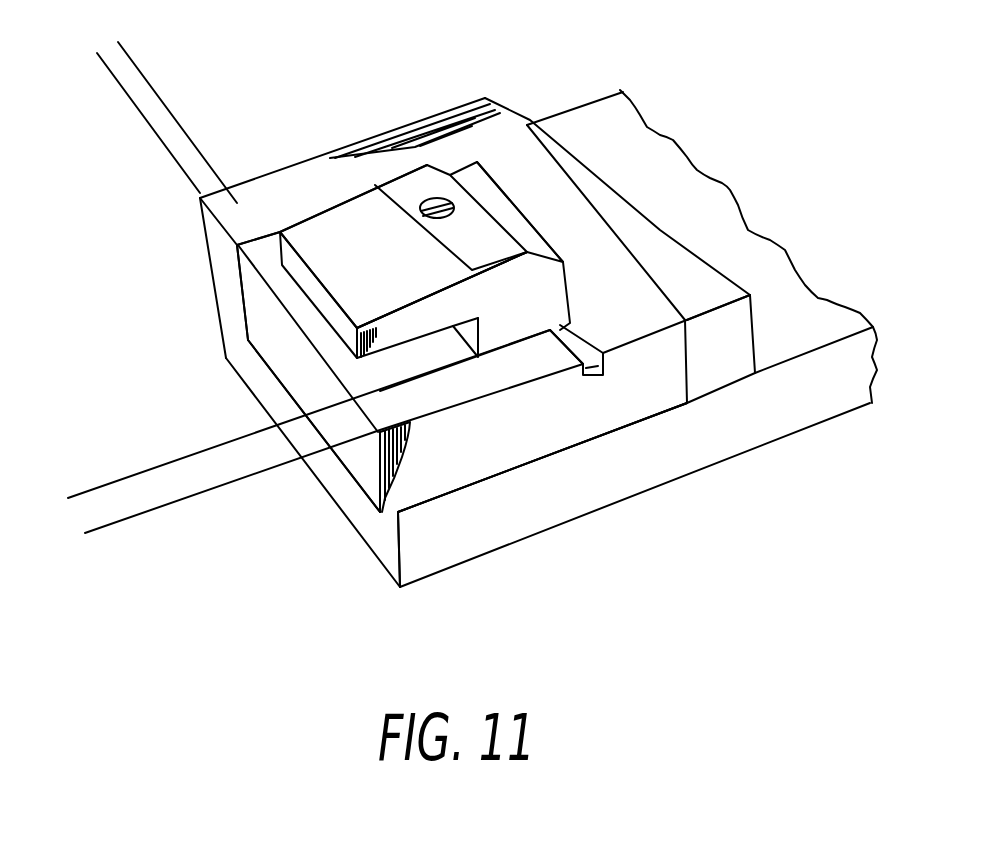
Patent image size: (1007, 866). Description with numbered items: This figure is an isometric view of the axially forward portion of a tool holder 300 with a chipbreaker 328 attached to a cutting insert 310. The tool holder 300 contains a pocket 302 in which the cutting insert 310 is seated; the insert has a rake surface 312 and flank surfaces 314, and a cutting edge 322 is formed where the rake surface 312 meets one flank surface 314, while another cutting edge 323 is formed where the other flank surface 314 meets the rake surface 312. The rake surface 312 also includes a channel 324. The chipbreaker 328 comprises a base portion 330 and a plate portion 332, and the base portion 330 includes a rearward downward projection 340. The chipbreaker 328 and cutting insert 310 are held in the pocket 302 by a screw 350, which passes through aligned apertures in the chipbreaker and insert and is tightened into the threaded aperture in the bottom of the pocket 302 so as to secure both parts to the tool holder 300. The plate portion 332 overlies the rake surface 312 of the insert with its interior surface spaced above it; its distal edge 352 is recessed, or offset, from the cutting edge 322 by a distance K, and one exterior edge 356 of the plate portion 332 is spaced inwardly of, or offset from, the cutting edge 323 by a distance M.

The tool holder 300 is at (618, 112).
The pocket 302 is at (598, 438).
The cutting insert 310 is at (253, 330).
The rake surface 312 is at (513, 203).
The flank surfaces 314 is at (363, 458).
The cutting edge 322 is at (263, 302).
The cutting edge 323 is at (377, 510).
The channel 324 is at (613, 380).
The chipbreaker 328 is at (348, 220).
The base portion 330 is at (533, 270).
The plate portion 332 is at (350, 296).
The rearward downward projection 340 is at (560, 330).
The screw 350 is at (442, 198).
The distal edge 352 is at (297, 271).
The exterior edge 356 is at (427, 315).
The distance K is at (55, 68).
The distance M is at (50, 460).